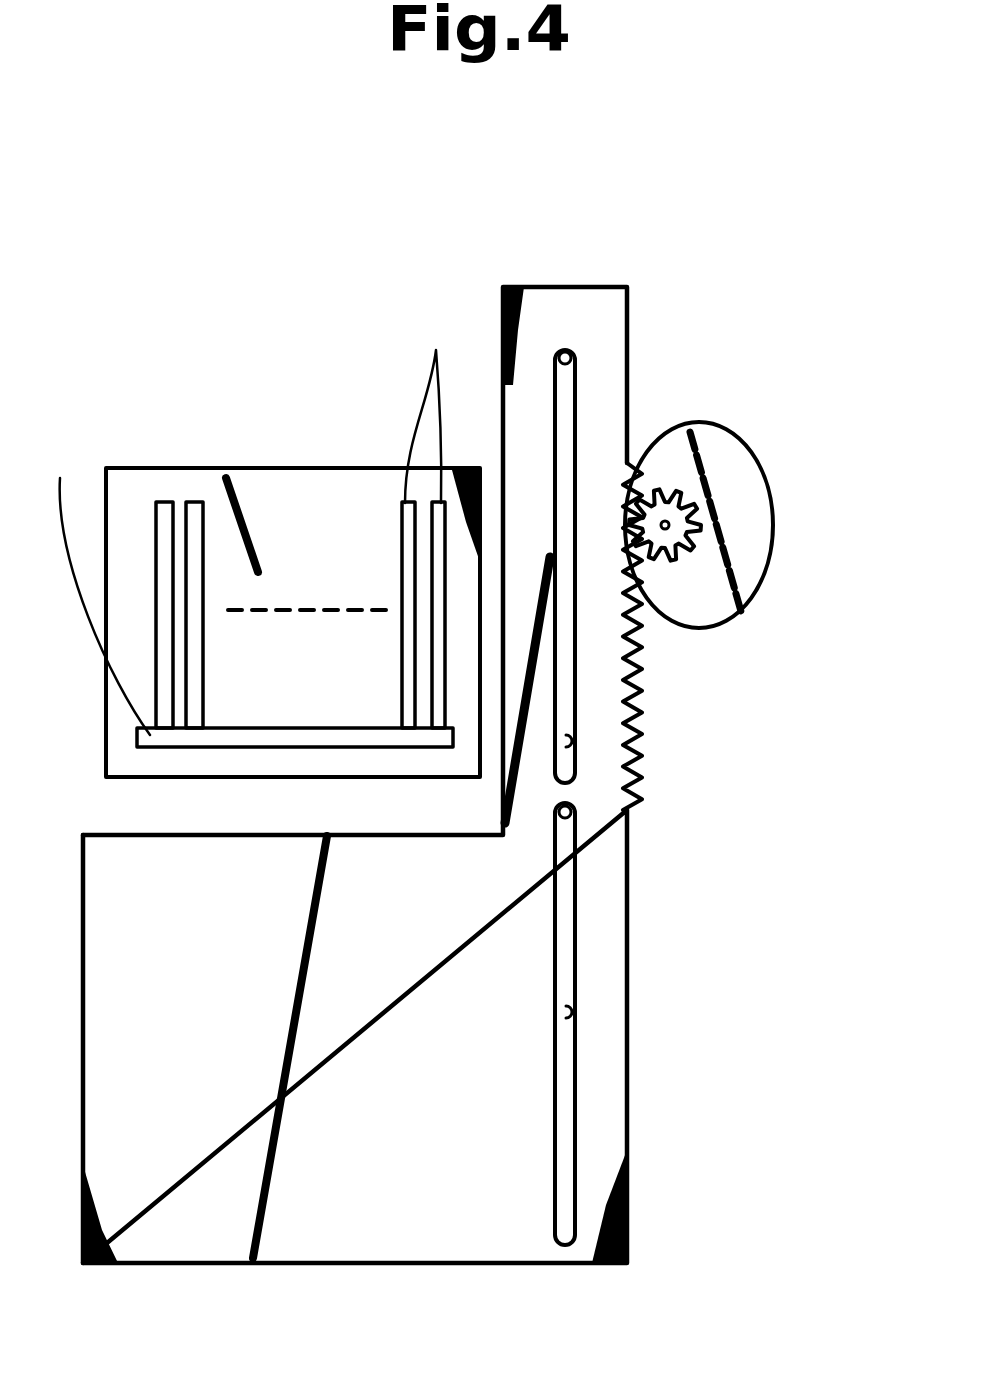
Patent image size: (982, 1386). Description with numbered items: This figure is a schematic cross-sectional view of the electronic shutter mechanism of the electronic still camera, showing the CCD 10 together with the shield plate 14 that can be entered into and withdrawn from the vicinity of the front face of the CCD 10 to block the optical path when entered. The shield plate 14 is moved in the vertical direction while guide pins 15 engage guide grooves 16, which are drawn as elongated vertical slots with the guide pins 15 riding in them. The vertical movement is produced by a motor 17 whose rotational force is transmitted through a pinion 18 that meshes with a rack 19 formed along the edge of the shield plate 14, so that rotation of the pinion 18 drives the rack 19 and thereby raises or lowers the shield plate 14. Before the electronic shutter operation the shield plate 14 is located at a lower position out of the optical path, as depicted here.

The CCD 10 is at (448, 778).
The shield plate 14 is at (593, 1170).
The guide pins 15 is at (567, 352).
The guide grooves 16 is at (575, 758).
The motor 17 is at (733, 498).
The pinion 18 is at (669, 505).
The rack 19 is at (642, 677).